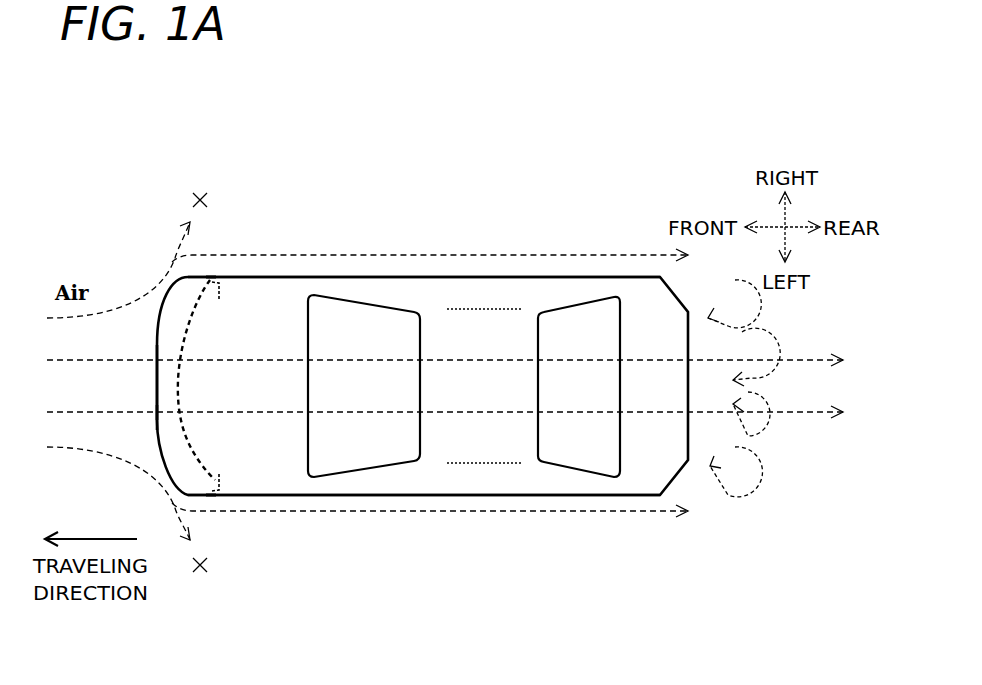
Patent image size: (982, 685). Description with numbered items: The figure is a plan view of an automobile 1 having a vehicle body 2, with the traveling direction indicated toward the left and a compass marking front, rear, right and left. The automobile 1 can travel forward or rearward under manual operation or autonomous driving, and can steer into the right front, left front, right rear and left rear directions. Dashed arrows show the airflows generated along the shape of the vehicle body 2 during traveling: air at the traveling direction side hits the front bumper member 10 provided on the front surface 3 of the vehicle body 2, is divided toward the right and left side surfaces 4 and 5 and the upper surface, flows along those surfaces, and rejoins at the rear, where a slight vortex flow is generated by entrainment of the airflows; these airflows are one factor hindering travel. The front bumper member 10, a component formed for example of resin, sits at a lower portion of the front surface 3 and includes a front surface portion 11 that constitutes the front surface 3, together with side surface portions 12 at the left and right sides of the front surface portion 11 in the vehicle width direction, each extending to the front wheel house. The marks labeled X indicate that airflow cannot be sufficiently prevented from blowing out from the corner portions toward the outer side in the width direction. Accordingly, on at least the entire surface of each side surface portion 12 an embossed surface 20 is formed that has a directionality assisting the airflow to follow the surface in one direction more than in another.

The automobile 1 is at (545, 222).
The vehicle body 2 is at (478, 283).
The front surface 3 is at (157, 383).
The right side surface 4 is at (410, 277).
The left side surface 5 is at (413, 497).
The front bumper member 10 is at (180, 417).
The front surface portion 11 is at (157, 422).
The side surface portion 12 is at (216, 292).
The embossed surface 20 is at (214, 278).